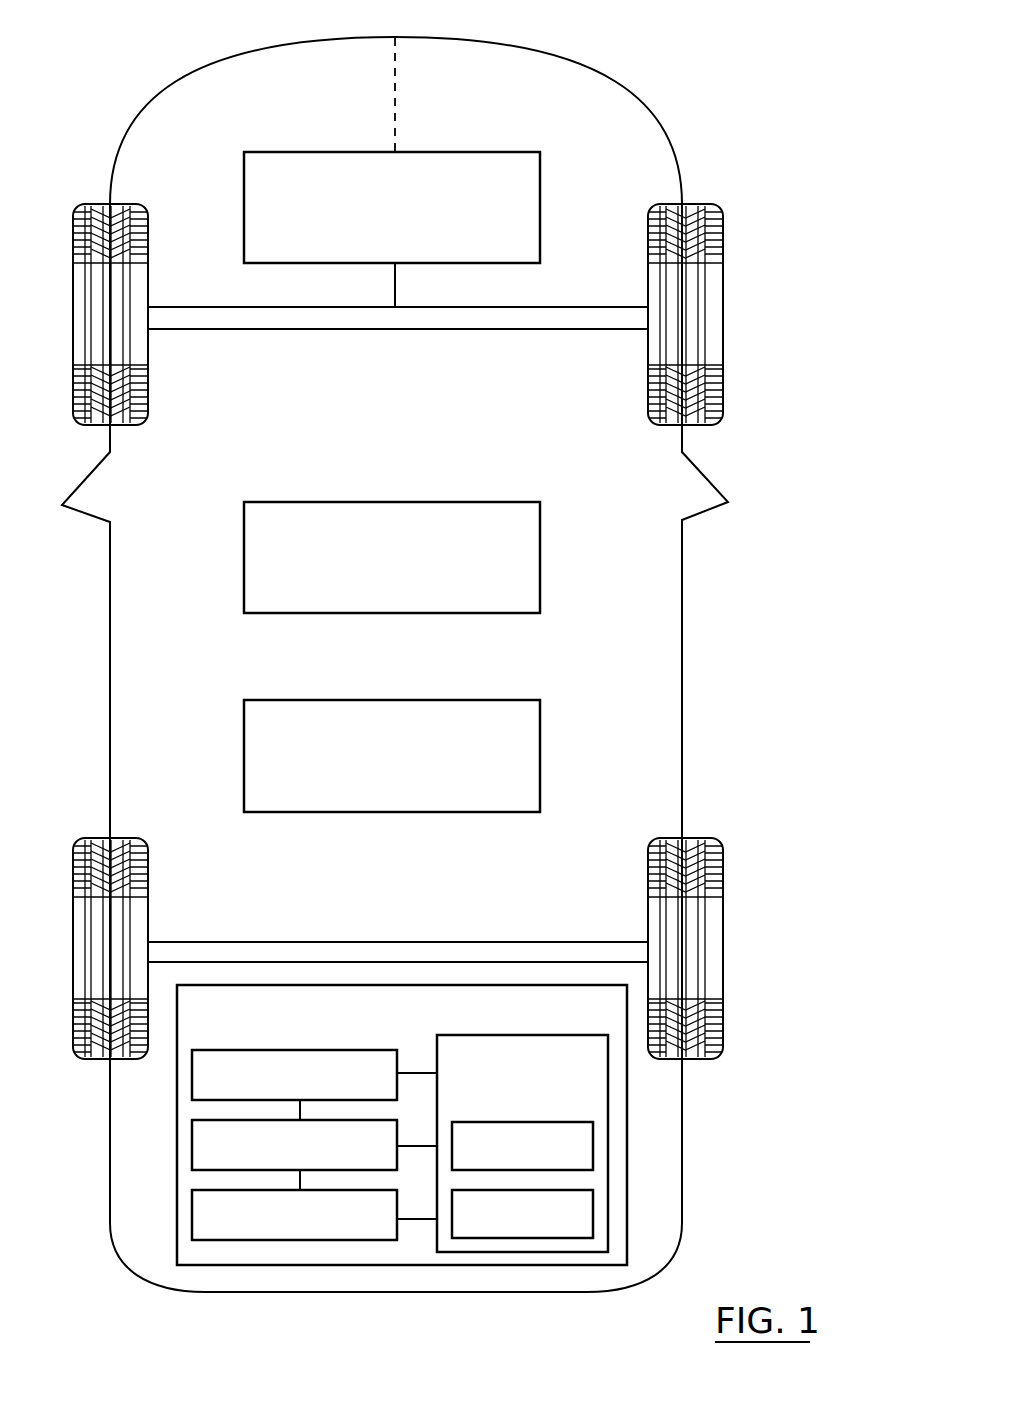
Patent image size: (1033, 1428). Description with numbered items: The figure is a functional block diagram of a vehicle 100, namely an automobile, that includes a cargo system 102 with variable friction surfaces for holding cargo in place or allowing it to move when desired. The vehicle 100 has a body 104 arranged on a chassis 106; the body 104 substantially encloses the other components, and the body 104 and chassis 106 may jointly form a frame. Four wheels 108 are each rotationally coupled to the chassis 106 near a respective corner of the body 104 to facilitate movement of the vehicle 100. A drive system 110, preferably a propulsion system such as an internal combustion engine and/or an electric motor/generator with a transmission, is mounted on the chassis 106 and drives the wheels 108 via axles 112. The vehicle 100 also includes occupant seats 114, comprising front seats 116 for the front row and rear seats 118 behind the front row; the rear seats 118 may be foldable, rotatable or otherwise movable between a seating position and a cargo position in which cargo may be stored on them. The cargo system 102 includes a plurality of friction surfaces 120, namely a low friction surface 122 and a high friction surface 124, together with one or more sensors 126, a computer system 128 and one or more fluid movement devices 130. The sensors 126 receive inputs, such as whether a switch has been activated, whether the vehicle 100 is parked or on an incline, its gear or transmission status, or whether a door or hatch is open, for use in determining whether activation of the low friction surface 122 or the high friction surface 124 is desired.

The vehicle 100 is at (658, 47).
The cargo system 102 is at (627, 1068).
The body 104 is at (110, 633).
The chassis 106 is at (403, 106).
The wheels 108 is at (112, 204).
The drive system 110 is at (413, 238).
The axles 112 is at (220, 318).
The occupant seats 114 is at (295, 620).
The front seats 116 is at (413, 587).
The rear seats 118 is at (413, 782).
The friction surfaces 120 is at (610, 1095).
The low friction surface 122 is at (594, 1153).
The high friction surface 124 is at (594, 1217).
The sensors 126 is at (193, 1073).
The computer system 128 is at (193, 1138).
The fluid movement devices 130 is at (193, 1202).